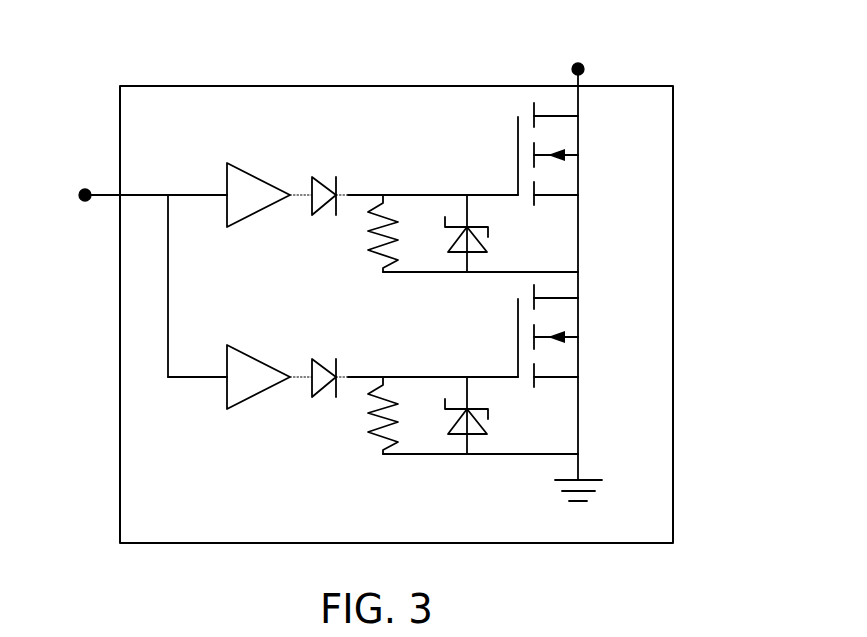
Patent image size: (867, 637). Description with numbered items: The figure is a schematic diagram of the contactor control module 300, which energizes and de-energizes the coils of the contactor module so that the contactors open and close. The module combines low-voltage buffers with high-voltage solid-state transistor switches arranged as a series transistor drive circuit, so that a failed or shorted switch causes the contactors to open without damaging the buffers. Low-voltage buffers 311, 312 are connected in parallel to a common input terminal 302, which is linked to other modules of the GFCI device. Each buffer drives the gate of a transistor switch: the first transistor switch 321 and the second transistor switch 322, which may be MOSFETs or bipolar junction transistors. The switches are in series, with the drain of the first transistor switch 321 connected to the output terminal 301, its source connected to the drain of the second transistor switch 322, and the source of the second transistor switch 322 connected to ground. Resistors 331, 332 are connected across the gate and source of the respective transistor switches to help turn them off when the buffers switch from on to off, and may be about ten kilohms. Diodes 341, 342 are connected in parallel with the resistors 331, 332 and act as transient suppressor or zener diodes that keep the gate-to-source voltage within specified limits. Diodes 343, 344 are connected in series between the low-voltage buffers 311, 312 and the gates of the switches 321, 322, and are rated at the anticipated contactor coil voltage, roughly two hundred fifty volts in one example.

The contactor control module 300 is at (286, 125).
The output terminal 301 is at (578, 69).
The input terminal 302 is at (85, 195).
The low-voltage buffer 311 is at (256, 234).
The low-voltage buffer 312 is at (263, 412).
The first transistor switch 321 is at (627, 150).
The second transistor switch 322 is at (617, 320).
The resistor 331 is at (356, 251).
The resistor 332 is at (356, 434).
The diode 341 is at (532, 215).
The diode 342 is at (532, 395).
The diode 343 is at (290, 221).
The diode 344 is at (288, 352).